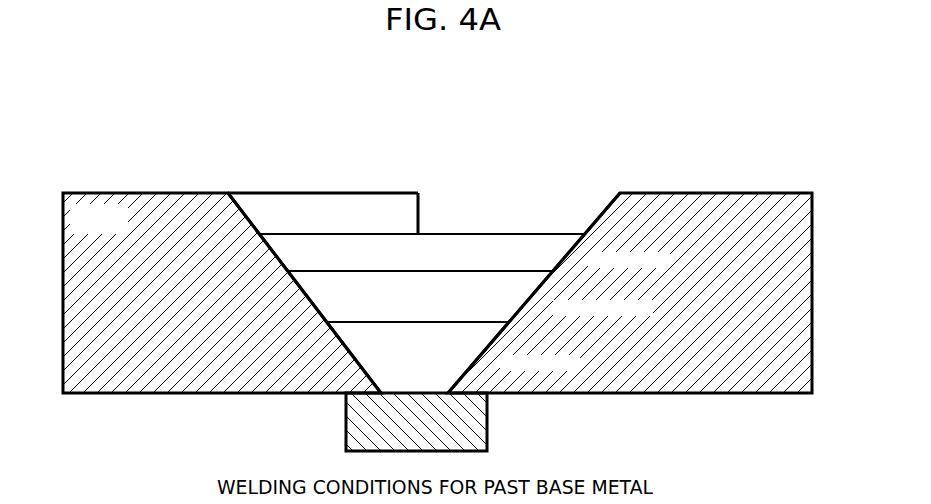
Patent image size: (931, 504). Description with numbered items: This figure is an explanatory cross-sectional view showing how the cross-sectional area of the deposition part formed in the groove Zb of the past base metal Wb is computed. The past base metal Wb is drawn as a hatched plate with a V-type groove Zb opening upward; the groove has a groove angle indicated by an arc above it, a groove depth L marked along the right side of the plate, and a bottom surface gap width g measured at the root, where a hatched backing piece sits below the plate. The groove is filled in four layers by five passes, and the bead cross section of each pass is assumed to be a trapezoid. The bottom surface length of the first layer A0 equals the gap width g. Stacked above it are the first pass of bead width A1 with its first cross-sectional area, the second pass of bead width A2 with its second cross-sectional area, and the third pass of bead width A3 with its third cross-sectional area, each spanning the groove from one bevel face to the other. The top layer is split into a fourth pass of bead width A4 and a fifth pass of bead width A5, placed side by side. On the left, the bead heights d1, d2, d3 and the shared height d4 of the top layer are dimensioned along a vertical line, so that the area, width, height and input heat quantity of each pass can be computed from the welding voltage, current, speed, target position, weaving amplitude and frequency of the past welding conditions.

The past base metal Wb is at (122, 193).
The groove of the past base metal Zb is at (585, 113).
The groove depth L is at (771, 196).
The gap width g is at (383, 401).
The bead height of first pass d1 is at (203, 325).
The bead height of second pass d2 is at (327, 322).
The bead height of third pass d3 is at (288, 271).
The bead height of fourth pass d4 is at (259, 234).
The bottom surface length of first layer A0 is at (417, 382).
The bead width of first pass A1 is at (344, 339).
The bead width of second pass A2 is at (310, 296).
The bead width of third pass A3 is at (272, 246).
The bead width of fourth pass A4 is at (240, 205).
The bead width of fifth pass A5 is at (607, 205).